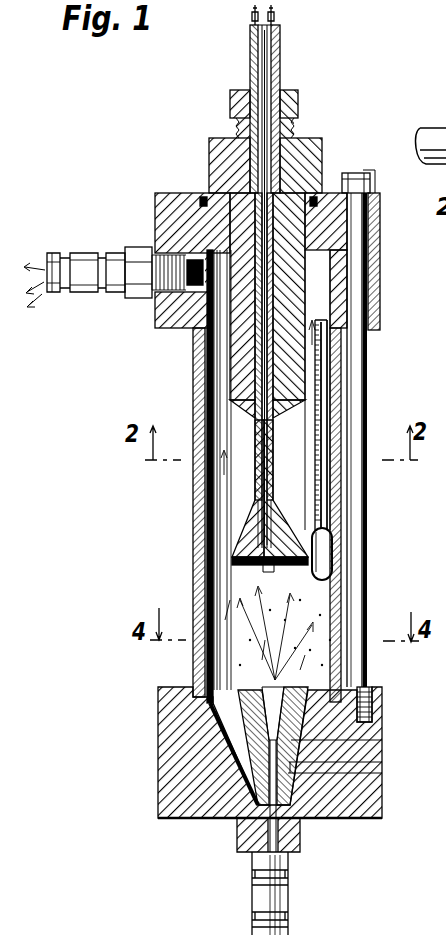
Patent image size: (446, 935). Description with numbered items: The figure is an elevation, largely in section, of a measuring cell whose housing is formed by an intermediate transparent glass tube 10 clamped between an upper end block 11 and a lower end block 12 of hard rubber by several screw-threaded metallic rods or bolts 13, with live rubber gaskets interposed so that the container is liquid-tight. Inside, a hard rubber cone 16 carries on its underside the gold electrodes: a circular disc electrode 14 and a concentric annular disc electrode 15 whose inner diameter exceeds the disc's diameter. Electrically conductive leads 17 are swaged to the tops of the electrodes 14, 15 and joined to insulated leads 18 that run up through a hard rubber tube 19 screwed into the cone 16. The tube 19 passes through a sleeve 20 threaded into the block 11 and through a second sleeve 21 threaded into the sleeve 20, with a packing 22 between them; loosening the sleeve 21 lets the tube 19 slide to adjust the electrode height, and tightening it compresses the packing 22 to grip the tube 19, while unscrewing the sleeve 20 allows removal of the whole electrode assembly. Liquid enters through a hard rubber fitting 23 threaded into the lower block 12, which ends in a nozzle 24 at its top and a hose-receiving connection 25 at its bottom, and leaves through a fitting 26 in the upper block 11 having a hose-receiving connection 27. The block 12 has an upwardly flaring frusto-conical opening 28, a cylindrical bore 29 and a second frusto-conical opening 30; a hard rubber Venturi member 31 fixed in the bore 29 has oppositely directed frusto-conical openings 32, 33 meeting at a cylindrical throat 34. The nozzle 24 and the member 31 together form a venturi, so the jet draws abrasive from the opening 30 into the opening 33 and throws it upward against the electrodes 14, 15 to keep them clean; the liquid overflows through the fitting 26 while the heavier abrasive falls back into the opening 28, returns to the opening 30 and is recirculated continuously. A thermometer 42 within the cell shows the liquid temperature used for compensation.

The transparent glass tube 10 is at (341, 583).
The upper end block 11 is at (155, 209).
The lower end block 12 is at (382, 806).
The screw-threaded metallic rods or bolts 13 is at (363, 551).
The circular disc electrode 14 is at (268, 568).
The annular disc electrode 15 is at (233, 566).
The cone 16 is at (298, 526).
The electrically conductive leads 17 is at (237, 546).
The leads 18 is at (278, 44).
The hard rubber tube 19 is at (281, 92).
The sleeve 20 is at (304, 372).
The second sleeve 21 is at (299, 104).
The packing 22 is at (320, 163).
The inlet fitting 23 is at (237, 843).
The nozzle 24 is at (375, 762).
The hose-receiving connection 25 is at (252, 892).
The outlet fitting 26 is at (136, 300).
The hose-receiving connection 27 is at (52, 293).
The upwardly flaring frusto-conical opening 28 is at (372, 700).
The cylindrical bore 29 is at (372, 740).
The second upwardly flaring frusto-conical opening 30 is at (297, 768).
The Venturi member 31 is at (355, 680).
The frusto-conical opening 32 is at (336, 633).
The frusto-conical opening 33 is at (375, 773).
The cylindrical opening or throat 34 is at (372, 716).
The thermometer 42 is at (328, 489).